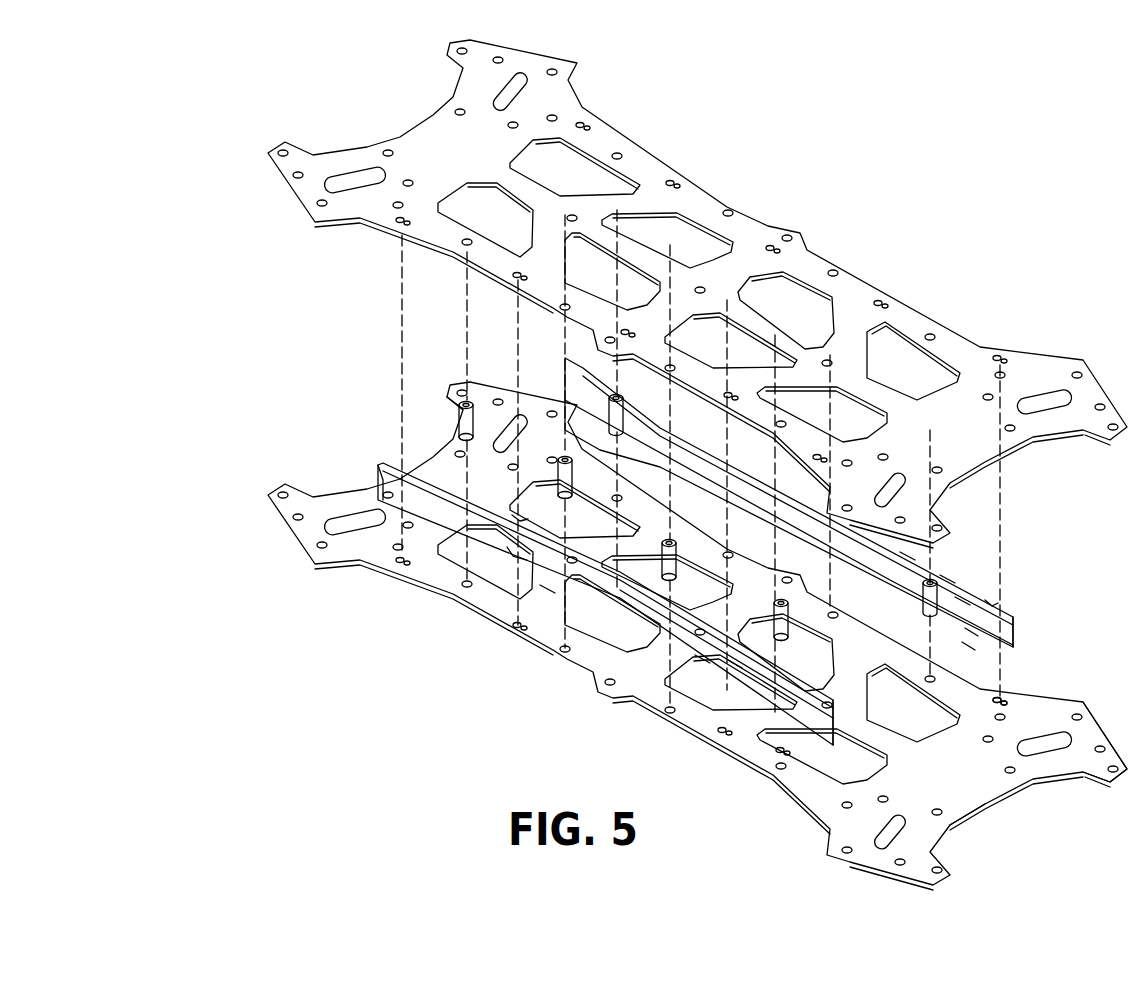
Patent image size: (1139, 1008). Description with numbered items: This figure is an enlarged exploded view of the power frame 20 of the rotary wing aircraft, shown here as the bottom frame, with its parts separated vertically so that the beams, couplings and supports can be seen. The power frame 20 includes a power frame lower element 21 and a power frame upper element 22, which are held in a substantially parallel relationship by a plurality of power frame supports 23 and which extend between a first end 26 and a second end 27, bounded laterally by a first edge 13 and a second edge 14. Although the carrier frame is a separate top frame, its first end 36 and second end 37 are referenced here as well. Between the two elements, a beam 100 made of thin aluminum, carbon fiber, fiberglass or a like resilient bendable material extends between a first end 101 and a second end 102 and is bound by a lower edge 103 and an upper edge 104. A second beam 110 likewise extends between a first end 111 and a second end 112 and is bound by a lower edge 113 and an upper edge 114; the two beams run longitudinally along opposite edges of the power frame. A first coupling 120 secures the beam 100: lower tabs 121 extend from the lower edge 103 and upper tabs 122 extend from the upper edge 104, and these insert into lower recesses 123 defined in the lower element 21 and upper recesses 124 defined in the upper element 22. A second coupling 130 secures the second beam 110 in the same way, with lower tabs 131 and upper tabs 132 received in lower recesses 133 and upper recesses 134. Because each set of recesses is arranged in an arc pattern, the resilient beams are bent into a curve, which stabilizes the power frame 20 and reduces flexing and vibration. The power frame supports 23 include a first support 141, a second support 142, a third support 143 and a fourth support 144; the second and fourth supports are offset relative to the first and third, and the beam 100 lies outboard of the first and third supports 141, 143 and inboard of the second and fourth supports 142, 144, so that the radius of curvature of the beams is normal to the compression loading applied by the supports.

The power frame 20 is at (243, 90).
The second edge 14 is at (700, 190).
The first edge 13 is at (587, 670).
The second end 37 is at (415, 115).
The power frame upper element 22 is at (903, 317).
The first end 36 is at (1040, 437).
The upper recesses 134 is at (997, 352).
The upper recesses 124 is at (397, 222).
The second end 112 is at (560, 357).
The power frame supports 23 is at (460, 410).
The first support 141 is at (462, 435).
The second end 27 is at (423, 450).
The second end 102 is at (378, 467).
The second coupling 130 is at (907, 580).
The upper edge 114 is at (948, 588).
The second beam 110 is at (963, 603).
The upper tabs 132 is at (990, 603).
The first end 111 is at (1020, 627).
The lower tabs 131 is at (968, 633).
The lower edge 113 is at (968, 648).
The lower recesses 133 is at (993, 700).
The first coupling 120 is at (447, 503).
The upper tabs 122 is at (520, 518).
The lower tabs 121 is at (527, 538).
The lower recesses 123 is at (547, 590).
The second support 142 is at (562, 480).
The fourth support 144 is at (670, 580).
The beam 100 is at (690, 640).
The lower edge 103 is at (703, 660).
The upper edge 104 is at (735, 665).
The third support 143 is at (783, 637).
The first end 101 is at (833, 750).
The power frame lower element 21 is at (1037, 773).
The first end 26 is at (983, 813).